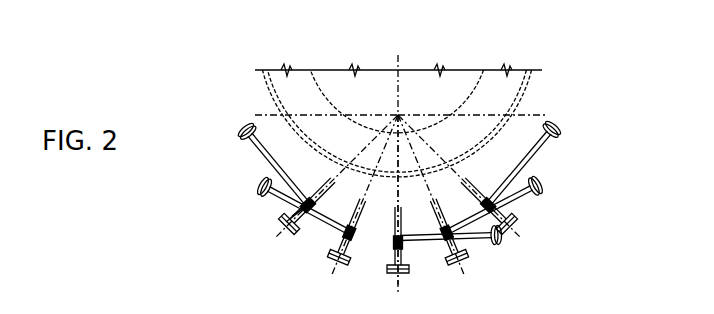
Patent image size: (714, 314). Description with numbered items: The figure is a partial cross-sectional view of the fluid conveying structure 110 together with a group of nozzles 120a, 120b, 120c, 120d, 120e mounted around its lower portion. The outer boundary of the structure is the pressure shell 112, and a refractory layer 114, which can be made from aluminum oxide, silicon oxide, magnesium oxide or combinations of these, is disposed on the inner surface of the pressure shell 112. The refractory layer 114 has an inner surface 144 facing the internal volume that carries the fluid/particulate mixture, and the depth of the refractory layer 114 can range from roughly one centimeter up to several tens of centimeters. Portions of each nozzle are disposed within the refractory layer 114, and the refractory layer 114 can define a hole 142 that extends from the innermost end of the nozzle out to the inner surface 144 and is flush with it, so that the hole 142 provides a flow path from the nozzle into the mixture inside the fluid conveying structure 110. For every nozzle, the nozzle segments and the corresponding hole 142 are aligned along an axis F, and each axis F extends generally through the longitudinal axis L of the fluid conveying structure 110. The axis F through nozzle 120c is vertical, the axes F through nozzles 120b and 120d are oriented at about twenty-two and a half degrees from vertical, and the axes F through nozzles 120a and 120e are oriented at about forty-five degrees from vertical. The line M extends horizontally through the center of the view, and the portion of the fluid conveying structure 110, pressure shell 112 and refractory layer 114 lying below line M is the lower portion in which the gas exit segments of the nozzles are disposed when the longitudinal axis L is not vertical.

The fluid conveying structure 110 is at (424, 92).
The pressure shell 112 is at (530, 90).
The refractory layer 114 is at (487, 76).
The nozzle 120a is at (575, 127).
The nozzle 120b is at (557, 180).
The nozzle 120c is at (518, 241).
The nozzle 120d is at (241, 186).
The nozzle 120e is at (225, 124).
The hole 142 is at (322, 190).
The inner surface 144 is at (474, 182).
The axis F is at (276, 233).
The line M is at (327, 100).
The longitudinal axis L is at (409, 154).